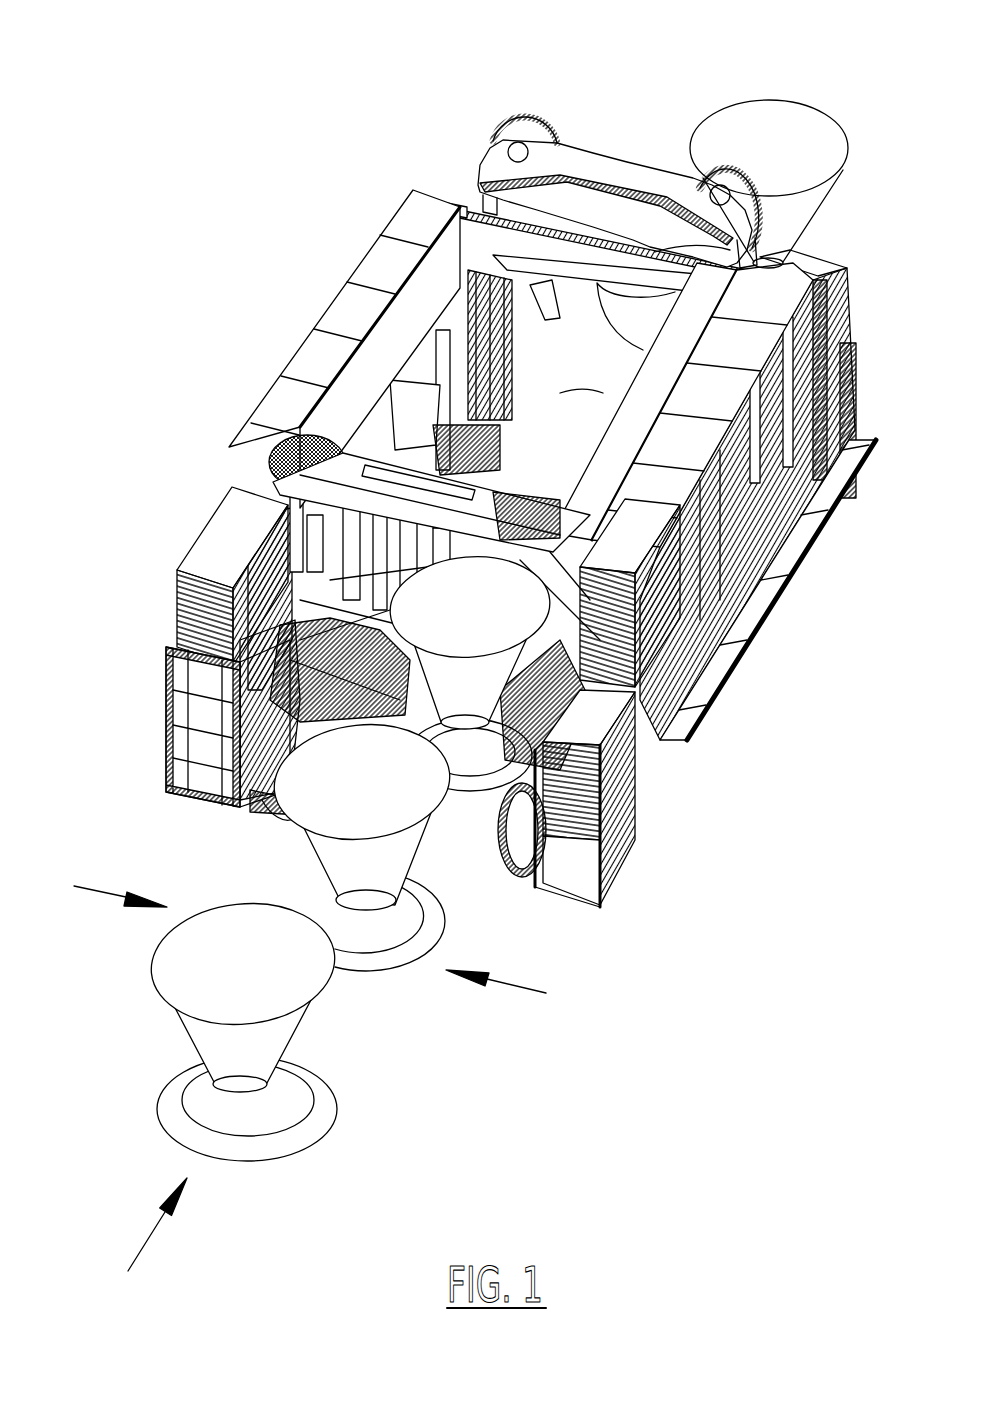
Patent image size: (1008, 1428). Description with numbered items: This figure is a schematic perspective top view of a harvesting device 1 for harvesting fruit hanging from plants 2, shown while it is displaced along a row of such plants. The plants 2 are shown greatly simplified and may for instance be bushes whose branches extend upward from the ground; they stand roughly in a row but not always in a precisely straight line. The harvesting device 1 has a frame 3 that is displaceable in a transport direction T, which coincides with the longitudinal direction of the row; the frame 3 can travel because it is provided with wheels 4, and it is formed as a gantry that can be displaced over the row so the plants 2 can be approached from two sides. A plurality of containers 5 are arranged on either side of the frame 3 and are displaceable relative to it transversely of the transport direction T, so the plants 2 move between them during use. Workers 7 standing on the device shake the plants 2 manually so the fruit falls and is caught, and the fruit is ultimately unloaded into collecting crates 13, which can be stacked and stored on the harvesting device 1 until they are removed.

The harvesting device 1 is at (178, 167).
The plant 2 is at (753, 115).
The frame 3 is at (457, 238).
The wheels 4 is at (285, 822).
The container 5 is at (317, 934).
The worker 7 is at (416, 412).
The collecting crate 13 is at (215, 546).
The transport direction T is at (157, 1224).